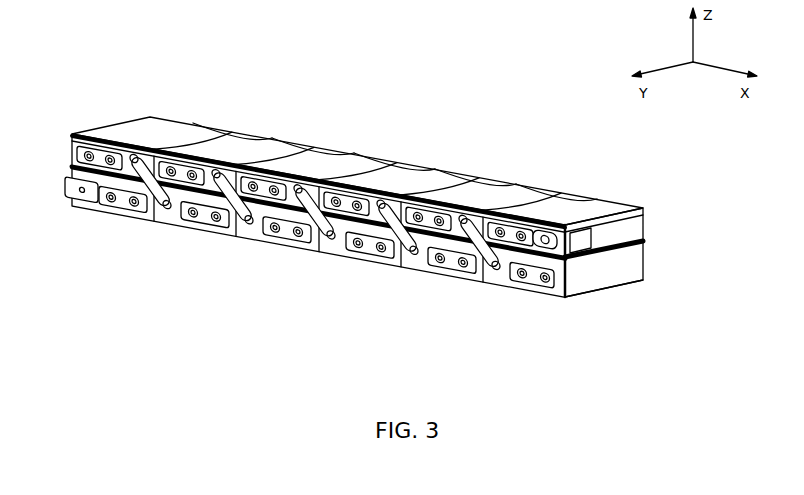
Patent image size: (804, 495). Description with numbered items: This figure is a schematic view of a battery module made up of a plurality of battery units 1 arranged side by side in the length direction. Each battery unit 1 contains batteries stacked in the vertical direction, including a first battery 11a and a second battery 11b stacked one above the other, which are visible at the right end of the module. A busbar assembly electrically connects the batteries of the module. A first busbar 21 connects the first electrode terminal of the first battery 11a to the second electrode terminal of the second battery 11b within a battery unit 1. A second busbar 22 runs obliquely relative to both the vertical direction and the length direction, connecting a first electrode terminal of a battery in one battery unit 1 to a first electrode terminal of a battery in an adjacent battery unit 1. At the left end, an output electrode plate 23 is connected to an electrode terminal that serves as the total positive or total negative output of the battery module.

The battery unit 1 is at (199, 120).
The first battery 11a is at (633, 233).
The second battery 11b is at (620, 280).
The first busbar 21 is at (127, 210).
The second busbar 22 is at (153, 208).
The output electrode plate 23 is at (80, 191).